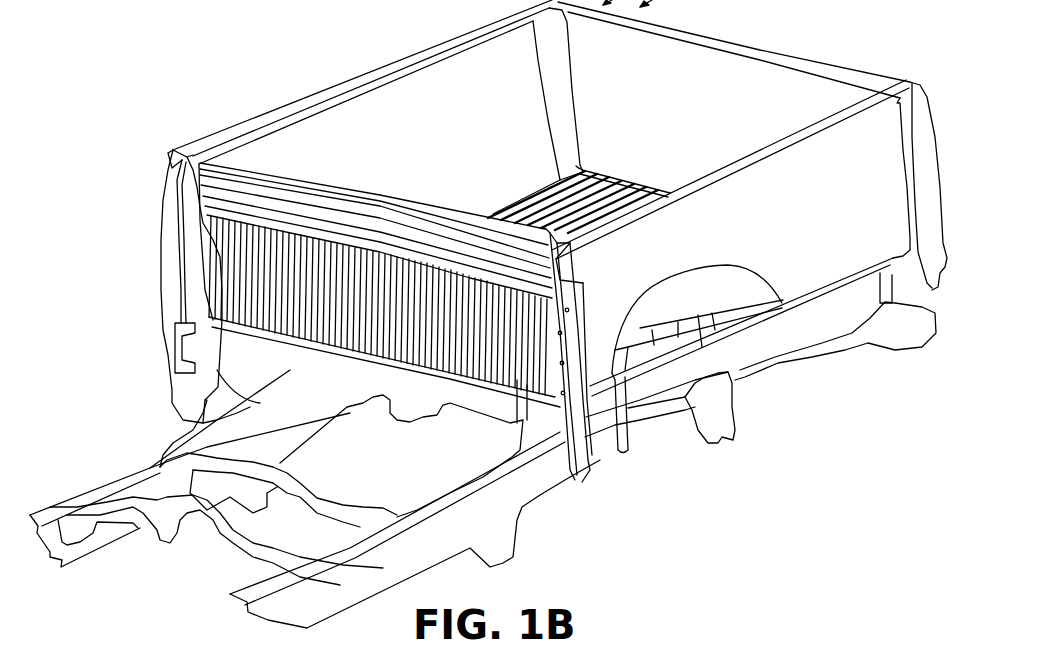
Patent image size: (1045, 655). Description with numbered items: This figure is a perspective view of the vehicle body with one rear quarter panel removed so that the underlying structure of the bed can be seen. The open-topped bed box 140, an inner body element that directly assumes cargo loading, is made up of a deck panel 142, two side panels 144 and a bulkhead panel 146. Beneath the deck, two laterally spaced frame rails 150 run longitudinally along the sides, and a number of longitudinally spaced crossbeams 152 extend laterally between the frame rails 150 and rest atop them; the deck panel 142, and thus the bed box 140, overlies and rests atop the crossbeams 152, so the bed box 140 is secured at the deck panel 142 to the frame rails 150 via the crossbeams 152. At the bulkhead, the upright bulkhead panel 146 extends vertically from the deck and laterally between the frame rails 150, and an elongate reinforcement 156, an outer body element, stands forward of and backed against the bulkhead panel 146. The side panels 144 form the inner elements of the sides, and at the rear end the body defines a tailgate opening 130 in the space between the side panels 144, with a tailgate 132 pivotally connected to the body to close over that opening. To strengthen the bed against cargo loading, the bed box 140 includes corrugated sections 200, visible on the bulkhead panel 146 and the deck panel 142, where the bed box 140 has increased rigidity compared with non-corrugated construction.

The tailgate opening 130 is at (725, 65).
The tailgate 132 is at (823, 58).
The bed box 140 is at (543, 88).
The deck panel 142 is at (540, 185).
The side panels 144 is at (707, 177).
The bulkhead panel 146 is at (232, 242).
The frame rails 150 is at (611, 425).
The crossbeams 152 is at (616, 413).
The reinforcement 156 is at (185, 196).
The corrugated sections 200 is at (245, 260).